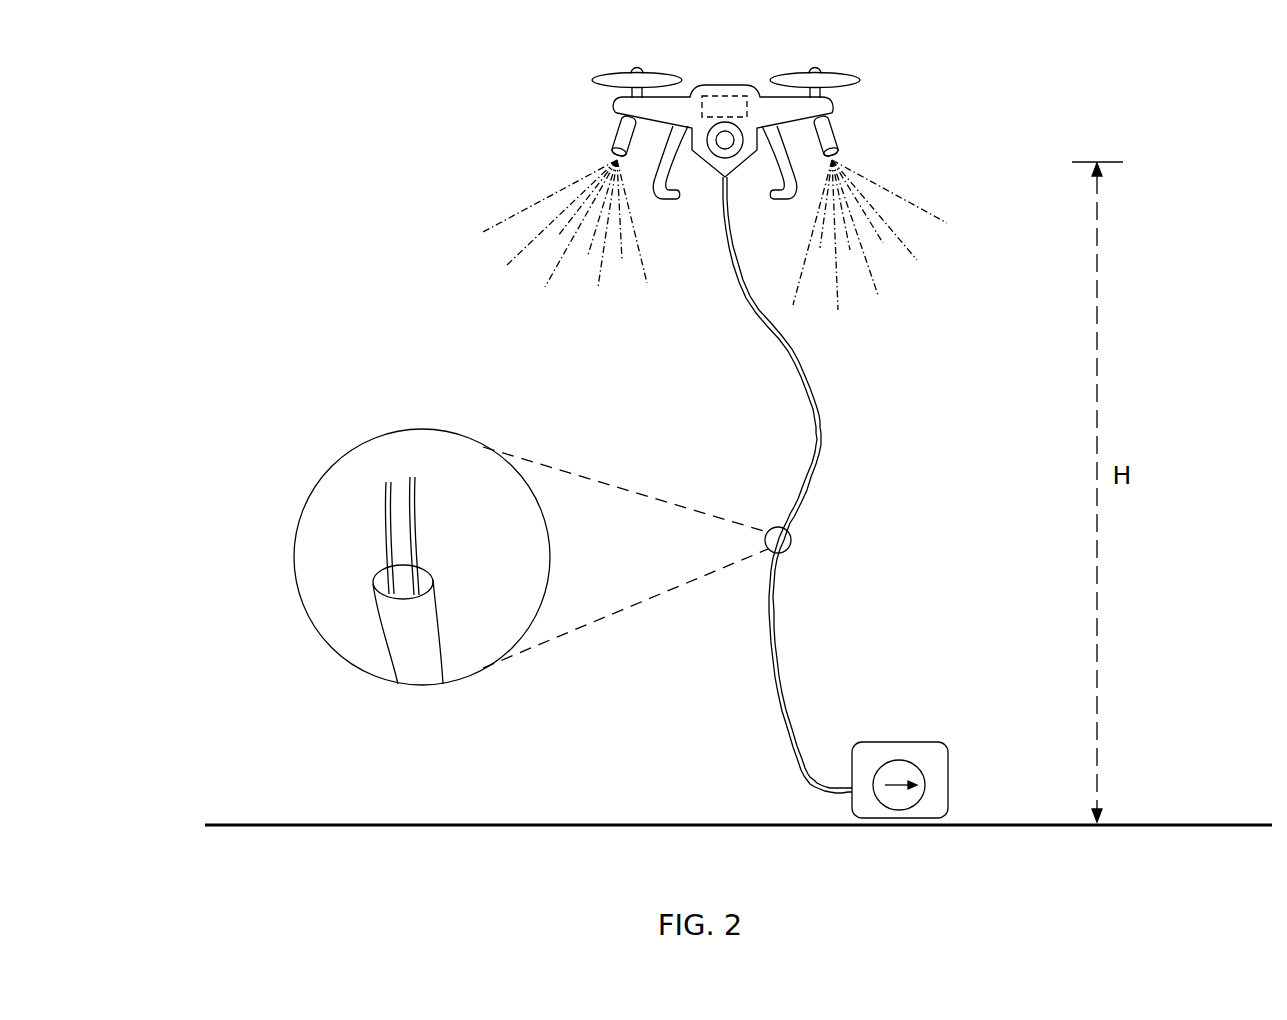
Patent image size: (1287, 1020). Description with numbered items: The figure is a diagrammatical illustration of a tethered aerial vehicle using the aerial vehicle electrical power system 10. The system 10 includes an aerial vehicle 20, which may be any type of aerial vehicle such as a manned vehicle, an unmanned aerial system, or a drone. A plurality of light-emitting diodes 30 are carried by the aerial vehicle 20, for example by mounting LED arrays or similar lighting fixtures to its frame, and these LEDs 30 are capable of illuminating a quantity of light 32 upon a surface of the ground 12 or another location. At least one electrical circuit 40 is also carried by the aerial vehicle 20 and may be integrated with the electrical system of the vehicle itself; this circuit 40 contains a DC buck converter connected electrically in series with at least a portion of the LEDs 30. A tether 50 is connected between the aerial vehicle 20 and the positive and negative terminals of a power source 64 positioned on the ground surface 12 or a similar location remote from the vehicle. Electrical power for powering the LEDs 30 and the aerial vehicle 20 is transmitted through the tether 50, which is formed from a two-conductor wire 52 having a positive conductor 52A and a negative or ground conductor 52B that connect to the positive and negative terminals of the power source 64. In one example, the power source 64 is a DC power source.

The aerial vehicle electrical power system 10 is at (166, 96).
The ground 12 is at (293, 822).
The aerial vehicle 20 is at (872, 105).
The light-emitting diodes 30 is at (616, 142).
The light 32 is at (472, 205).
The electrical circuit 40 is at (723, 103).
The tether 50 is at (819, 448).
The two-conductor wire 52 is at (412, 657).
The positive conductor 52A is at (385, 542).
The negative conductor 52B is at (418, 490).
The power source 64 is at (948, 762).